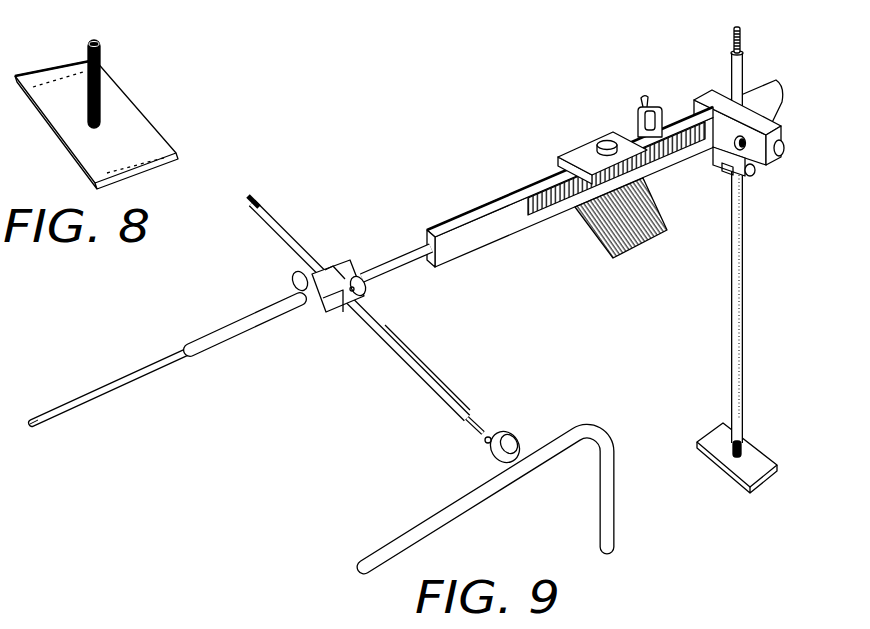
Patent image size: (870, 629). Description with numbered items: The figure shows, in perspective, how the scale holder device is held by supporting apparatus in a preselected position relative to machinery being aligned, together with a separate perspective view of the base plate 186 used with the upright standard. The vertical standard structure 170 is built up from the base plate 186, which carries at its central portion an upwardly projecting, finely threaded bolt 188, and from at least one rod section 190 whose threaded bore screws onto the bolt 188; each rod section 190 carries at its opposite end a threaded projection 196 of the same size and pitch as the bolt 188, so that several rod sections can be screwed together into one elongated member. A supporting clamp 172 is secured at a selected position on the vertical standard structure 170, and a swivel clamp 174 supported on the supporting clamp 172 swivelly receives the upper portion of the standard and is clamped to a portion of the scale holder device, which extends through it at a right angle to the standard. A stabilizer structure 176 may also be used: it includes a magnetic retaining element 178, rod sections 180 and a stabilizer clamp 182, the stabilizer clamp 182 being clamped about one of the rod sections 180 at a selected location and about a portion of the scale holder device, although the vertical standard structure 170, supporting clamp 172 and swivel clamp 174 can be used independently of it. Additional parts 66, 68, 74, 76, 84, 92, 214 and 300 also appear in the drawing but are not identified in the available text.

In FIG. 9, the carriage 66 is at (597, 136).
In FIG. 9, the locking lever 68 is at (641, 105).
In FIG. 9, the probe rod 74 is at (248, 315).
In FIG. 9, the rod tip 76 is at (24, 428).
In FIG. 9, the extension rod 84 is at (220, 344).
In FIG. 9, the rail side face 92 is at (483, 233).
In FIG. 9, the vertical standard structure 170 is at (727, 302).
In FIG. 9, the supporting clamp 172 is at (725, 176).
In FIG. 9, the swivel clamp 174 is at (783, 118).
In FIG. 9, the stabilizer structure 176 is at (415, 353).
In FIG. 9, the magnetic retaining element 178 is at (528, 436).
In FIG. 9, the rod sections 180 is at (281, 224).
In FIG. 9, the stabilizer clamp 182 is at (325, 316).
In FIG. 8, the base plate 186 is at (135, 128).
In FIG. 9, the base plate 186 is at (748, 478).
In FIG. 8, the threaded bolt 188 is at (103, 64).
In FIG. 9, the threaded bolt 188 is at (742, 452).
In FIG. 9, the rod section 190 is at (744, 262).
In FIG. 9, the threaded projection 196 is at (742, 36).
In FIG. 9, the adjusting knob 214 is at (789, 150).
In FIG. 9, the handle bar 300 is at (478, 500).